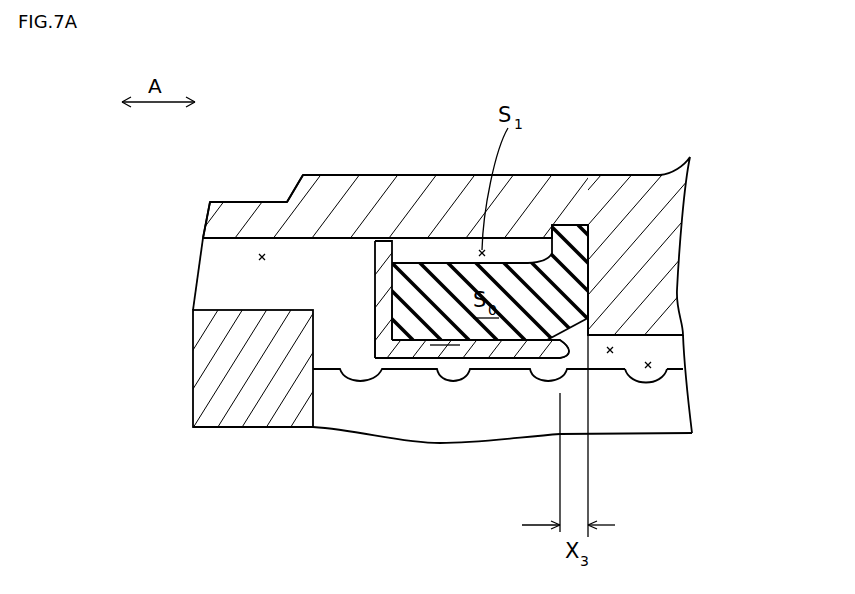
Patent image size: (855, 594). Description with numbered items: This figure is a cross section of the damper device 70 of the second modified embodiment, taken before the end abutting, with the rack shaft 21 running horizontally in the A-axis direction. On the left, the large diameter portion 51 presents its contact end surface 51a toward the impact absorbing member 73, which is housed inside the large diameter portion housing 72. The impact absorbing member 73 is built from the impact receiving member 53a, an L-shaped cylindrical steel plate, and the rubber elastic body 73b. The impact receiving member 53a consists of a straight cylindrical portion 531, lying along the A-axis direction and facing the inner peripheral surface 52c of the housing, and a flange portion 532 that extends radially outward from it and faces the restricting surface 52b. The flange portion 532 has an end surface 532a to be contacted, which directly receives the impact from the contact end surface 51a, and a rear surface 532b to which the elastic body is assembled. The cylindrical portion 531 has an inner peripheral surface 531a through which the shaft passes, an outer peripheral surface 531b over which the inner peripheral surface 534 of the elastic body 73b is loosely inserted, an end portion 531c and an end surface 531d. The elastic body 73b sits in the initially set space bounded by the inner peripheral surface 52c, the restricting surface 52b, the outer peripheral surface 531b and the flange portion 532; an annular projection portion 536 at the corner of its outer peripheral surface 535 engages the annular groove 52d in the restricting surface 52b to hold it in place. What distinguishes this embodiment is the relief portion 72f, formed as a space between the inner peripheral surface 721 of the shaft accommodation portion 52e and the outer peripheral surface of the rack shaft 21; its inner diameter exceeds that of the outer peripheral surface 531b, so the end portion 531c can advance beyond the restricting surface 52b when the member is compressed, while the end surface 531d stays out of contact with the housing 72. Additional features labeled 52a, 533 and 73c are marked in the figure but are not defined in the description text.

The damper device 70 is at (298, 108).
The large diameter portion housing 72 is at (516, 213).
The impact absorbing member 73 is at (456, 222).
The left side face 52a is at (206, 238).
The inner peripheral surface 52c is at (262, 257).
The step portion 533 is at (300, 247).
The flange portion 532 is at (378, 283).
The outer peripheral surface 535 is at (427, 262).
The annular groove 52d is at (540, 245).
The annular projection portion 536 is at (558, 228).
The restricting surface 52b is at (590, 263).
The inner peripheral surface 721 is at (600, 336).
The relief portion 72f is at (613, 350).
The shaft accommodation portion 52e is at (655, 375).
The rack shaft 21 is at (663, 417).
The large diameter portion 51 is at (194, 290).
The contact end surface 51a is at (192, 286).
The cylindrical portion 531 is at (412, 358).
The end surface to be contacted 532a is at (376, 330).
The rear surface 532b is at (391, 335).
The impact receiving member 53a is at (395, 358).
The inner peripheral surface 531a is at (432, 357).
The elastic body 73b is at (445, 352).
The contact face 73c is at (411, 442).
The inner peripheral surface 534 is at (505, 350).
The outer peripheral surface 531b is at (497, 362).
The end portion 531c is at (553, 357).
The end surface 531d is at (563, 362).